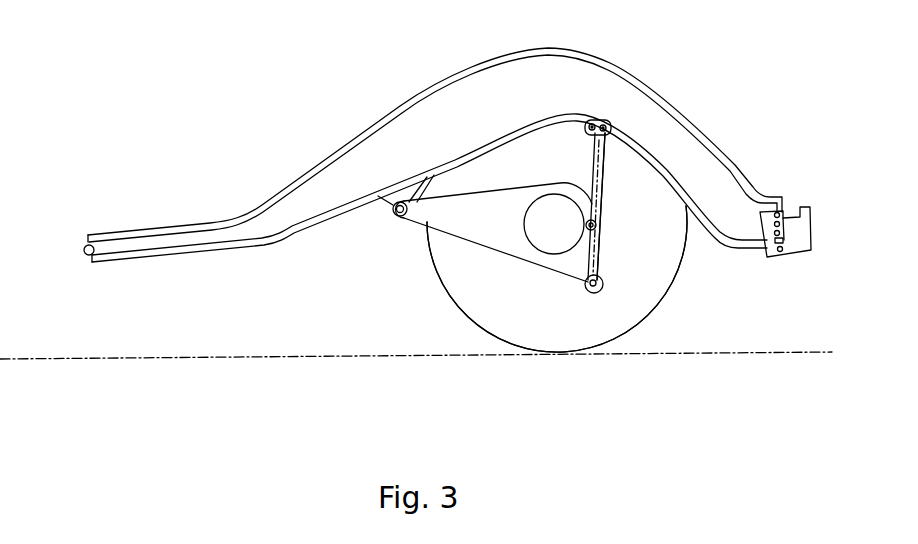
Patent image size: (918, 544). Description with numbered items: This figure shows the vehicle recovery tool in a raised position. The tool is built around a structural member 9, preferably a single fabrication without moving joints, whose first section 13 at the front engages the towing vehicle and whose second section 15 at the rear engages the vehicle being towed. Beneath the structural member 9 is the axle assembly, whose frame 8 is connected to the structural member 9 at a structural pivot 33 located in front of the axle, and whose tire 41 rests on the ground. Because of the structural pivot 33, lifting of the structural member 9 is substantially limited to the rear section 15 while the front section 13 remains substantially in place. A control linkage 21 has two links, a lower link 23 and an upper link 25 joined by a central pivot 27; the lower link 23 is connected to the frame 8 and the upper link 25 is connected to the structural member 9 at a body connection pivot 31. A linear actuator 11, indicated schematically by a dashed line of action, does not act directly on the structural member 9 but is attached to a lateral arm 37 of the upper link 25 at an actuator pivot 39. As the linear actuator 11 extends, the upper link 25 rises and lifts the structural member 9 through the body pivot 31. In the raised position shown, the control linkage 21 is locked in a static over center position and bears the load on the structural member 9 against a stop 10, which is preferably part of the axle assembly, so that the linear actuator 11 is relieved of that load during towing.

The axle assembly frame 8 is at (460, 233).
The structural member 9 is at (603, 66).
The stop 10 is at (534, 249).
The linear actuator 11 is at (592, 151).
The first section 13 is at (88, 219).
The second section 15 is at (774, 184).
The control linkage 21 is at (661, 249).
The lower link 23 is at (599, 254).
The upper link 25 is at (606, 153).
The central pivot 27 is at (598, 226).
The body connection pivot 31 is at (606, 126).
The structural pivot 33 is at (395, 218).
The lateral arm 37 is at (596, 122).
The actuator pivot 39 is at (588, 128).
The tire 41 is at (656, 311).